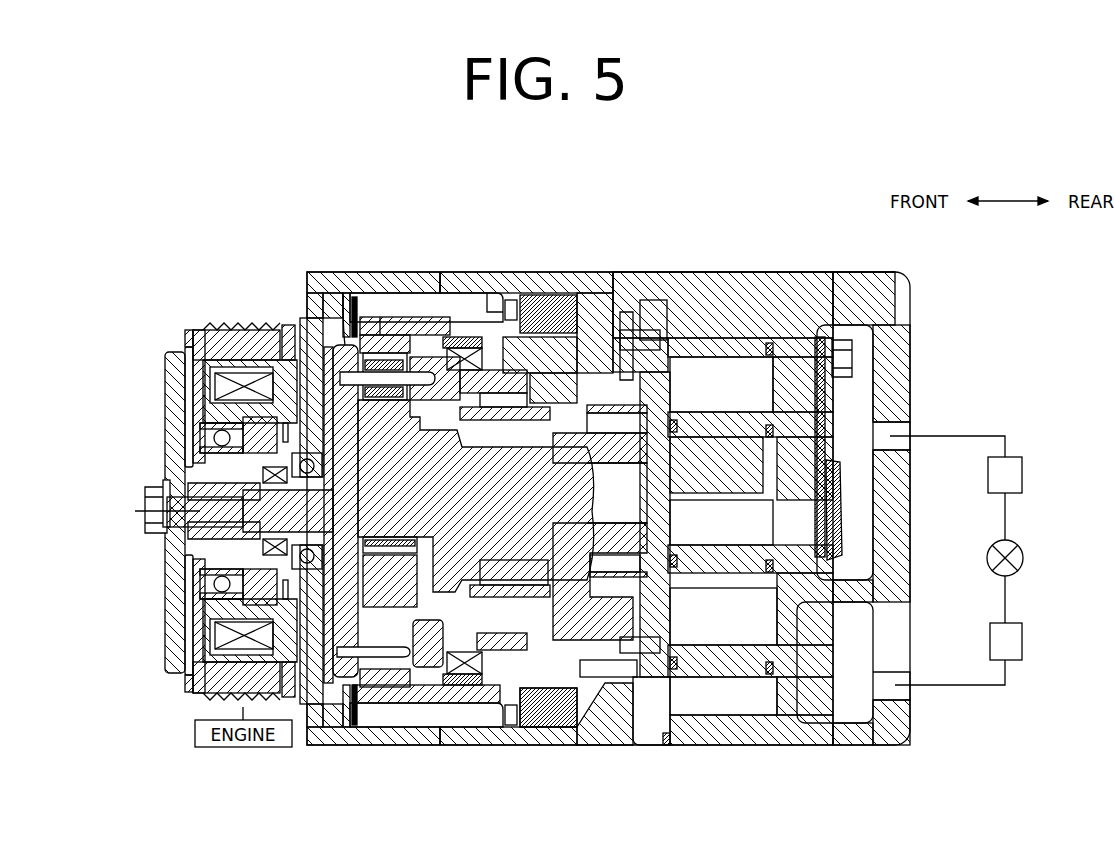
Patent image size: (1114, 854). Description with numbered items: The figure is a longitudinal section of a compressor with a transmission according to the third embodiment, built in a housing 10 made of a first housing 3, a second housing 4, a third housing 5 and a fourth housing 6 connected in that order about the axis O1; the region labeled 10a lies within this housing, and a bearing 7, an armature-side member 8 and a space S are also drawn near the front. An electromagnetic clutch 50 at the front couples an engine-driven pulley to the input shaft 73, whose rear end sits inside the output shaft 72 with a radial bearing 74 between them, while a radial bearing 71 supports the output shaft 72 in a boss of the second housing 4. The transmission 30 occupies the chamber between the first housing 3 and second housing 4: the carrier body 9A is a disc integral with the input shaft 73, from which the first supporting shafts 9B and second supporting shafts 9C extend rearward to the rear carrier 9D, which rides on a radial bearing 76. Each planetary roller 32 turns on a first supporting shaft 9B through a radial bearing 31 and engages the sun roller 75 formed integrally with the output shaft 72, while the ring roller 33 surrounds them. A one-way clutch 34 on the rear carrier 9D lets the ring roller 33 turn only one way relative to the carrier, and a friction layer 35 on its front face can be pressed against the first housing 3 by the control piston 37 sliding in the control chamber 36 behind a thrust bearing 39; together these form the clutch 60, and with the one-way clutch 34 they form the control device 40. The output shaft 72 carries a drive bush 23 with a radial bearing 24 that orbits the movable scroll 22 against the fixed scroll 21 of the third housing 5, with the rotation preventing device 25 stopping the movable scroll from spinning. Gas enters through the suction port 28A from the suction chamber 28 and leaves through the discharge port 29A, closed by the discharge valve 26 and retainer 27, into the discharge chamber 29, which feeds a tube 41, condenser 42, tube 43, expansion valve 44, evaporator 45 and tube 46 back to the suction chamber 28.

The first housing 3 is at (378, 742).
The second housing 4 is at (560, 745).
The third housing 5 is at (696, 745).
The fourth housing 6 is at (850, 745).
The bearing 7 is at (270, 570).
The armature plate 8 is at (313, 688).
The housing 10 is at (905, 752).
The housing groove 10a is at (380, 732).
The fixed scroll 21 is at (770, 278).
The movable scroll 22 is at (651, 304).
The drive bush 23 is at (627, 531).
The radial bearing 24 is at (667, 395).
The rotation preventing device 25 is at (622, 304).
The discharge valve 26 is at (836, 545).
The retainer 27 is at (835, 485).
The suction chamber 28 is at (835, 662).
The suction port 28A is at (778, 708).
The discharge chamber 29 is at (845, 452).
The discharge port 29A is at (792, 532).
The transmission 30 is at (458, 712).
The radial bearing 31 is at (407, 345).
The planetary roller 32 is at (412, 400).
The ring roller 33 is at (443, 326).
The one-way clutch 34 is at (480, 357).
The friction layer 35 is at (352, 300).
The control chamber 36 is at (540, 295).
The control piston 37 is at (518, 292).
The thrust bearing 39 is at (490, 298).
The control device 40 is at (581, 728).
The tube 41 is at (957, 436).
The condenser 42 is at (1008, 445).
The tube 43 is at (1010, 512).
The expansion valve 44 is at (1023, 560).
The evaporator 45 is at (1023, 640).
The tube 46 is at (1008, 680).
The electromagnetic clutch 50 is at (180, 321).
The clutch 60 is at (548, 707).
The radial bearing 71 is at (552, 425).
The output shaft 72 is at (417, 496).
The input shaft 73 is at (163, 540).
The radial bearing 74 is at (415, 578).
The sun roller 75 is at (373, 605).
The radial bearing 76 is at (497, 633).
The carrier body 9A is at (342, 300).
The first supporting shaft 9B is at (385, 318).
The second supporting shaft 9C is at (402, 719).
The rear carrier 9D is at (432, 719).
The space S is at (154, 463).
The axis O1 is at (155, 511).